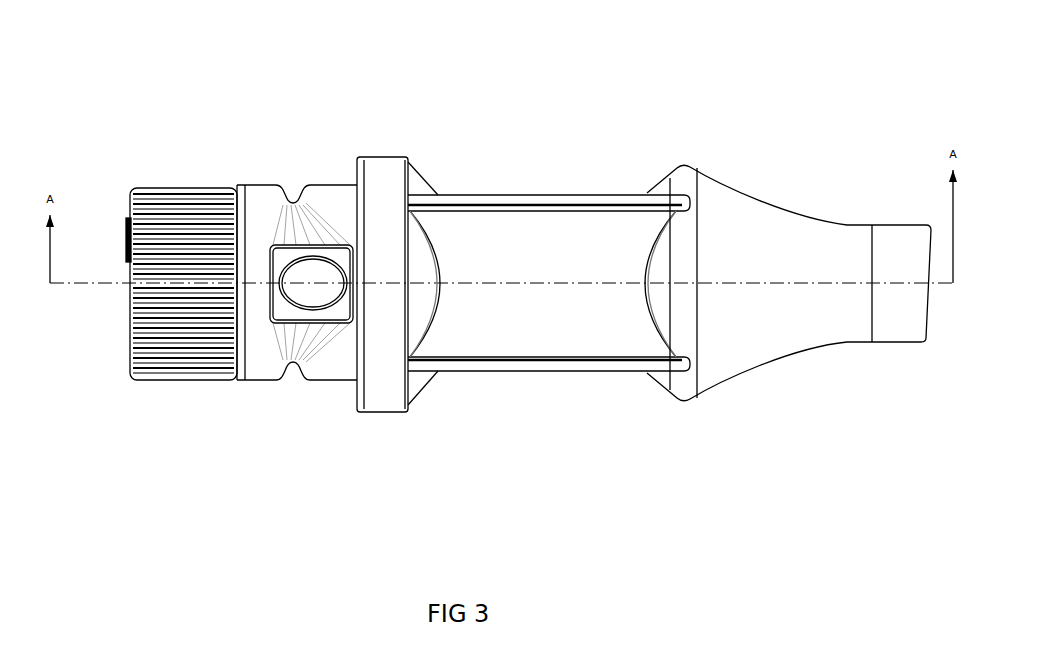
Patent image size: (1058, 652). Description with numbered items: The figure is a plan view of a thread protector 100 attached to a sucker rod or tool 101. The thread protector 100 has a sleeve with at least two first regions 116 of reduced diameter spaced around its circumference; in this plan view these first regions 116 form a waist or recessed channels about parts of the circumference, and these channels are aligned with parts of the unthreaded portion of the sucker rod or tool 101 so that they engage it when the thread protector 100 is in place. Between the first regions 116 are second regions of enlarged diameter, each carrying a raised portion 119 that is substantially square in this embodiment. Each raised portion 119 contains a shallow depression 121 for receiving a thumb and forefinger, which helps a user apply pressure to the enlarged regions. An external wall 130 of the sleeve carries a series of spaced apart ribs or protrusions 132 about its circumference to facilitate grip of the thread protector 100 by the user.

The thread protector 100 is at (512, 265).
The sucker rod or tool 101 is at (560, 130).
The first regions 116 is at (293, 193).
The raised portion 119 is at (342, 243).
The shallow depression 121 is at (327, 297).
The external wall 130 is at (243, 380).
The ribs or protrusions 132 is at (168, 352).